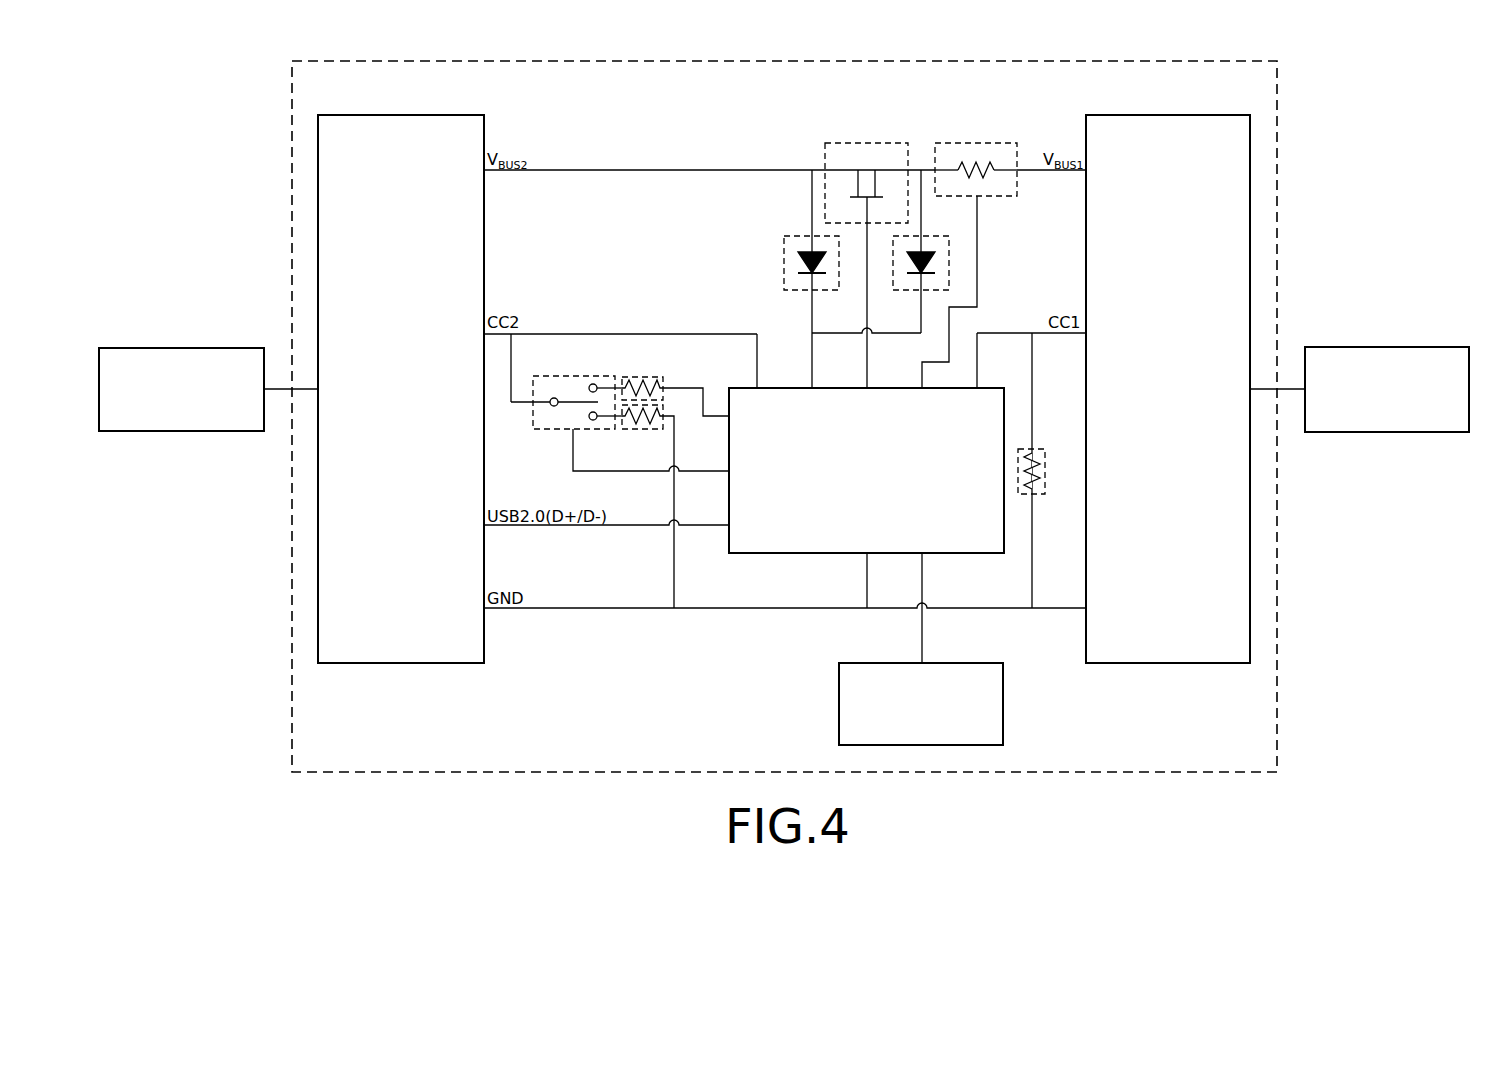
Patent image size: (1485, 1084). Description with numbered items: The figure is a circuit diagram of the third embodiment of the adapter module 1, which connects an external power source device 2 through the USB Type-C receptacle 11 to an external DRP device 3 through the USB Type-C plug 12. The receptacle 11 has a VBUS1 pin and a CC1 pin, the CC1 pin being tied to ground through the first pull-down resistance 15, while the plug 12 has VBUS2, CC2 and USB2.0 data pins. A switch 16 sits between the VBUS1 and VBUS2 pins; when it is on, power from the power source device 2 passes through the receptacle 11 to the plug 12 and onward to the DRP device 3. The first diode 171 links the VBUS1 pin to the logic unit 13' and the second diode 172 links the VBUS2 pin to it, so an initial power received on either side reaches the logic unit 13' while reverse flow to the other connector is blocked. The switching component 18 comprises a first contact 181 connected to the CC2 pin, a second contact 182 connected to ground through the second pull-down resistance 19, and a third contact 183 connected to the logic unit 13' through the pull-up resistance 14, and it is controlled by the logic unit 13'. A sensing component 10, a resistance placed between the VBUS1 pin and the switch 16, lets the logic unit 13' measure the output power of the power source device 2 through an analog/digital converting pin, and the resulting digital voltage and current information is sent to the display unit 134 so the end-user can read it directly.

The adapter module 1 is at (782, 70).
The power source device 2 is at (1387, 353).
The DRP device 3 is at (182, 352).
The sensing component 10 is at (977, 143).
The USB Type-C receptacle 11 is at (1168, 120).
The USB Type-C plug 12 is at (400, 120).
The logic unit 13' is at (866, 488).
The pull-up resistance 14 is at (664, 382).
The first pull-down resistance 15 is at (1040, 449).
The switch 16 is at (866, 143).
The switching component 18 is at (561, 405).
The second pull-down resistance 19 is at (668, 407).
The display unit 134 is at (932, 670).
The first diode 171 is at (949, 262).
The second diode 172 is at (784, 260).
The first contact 181 is at (554, 406).
The second contact 182 is at (594, 420).
The third contact 183 is at (590, 384).